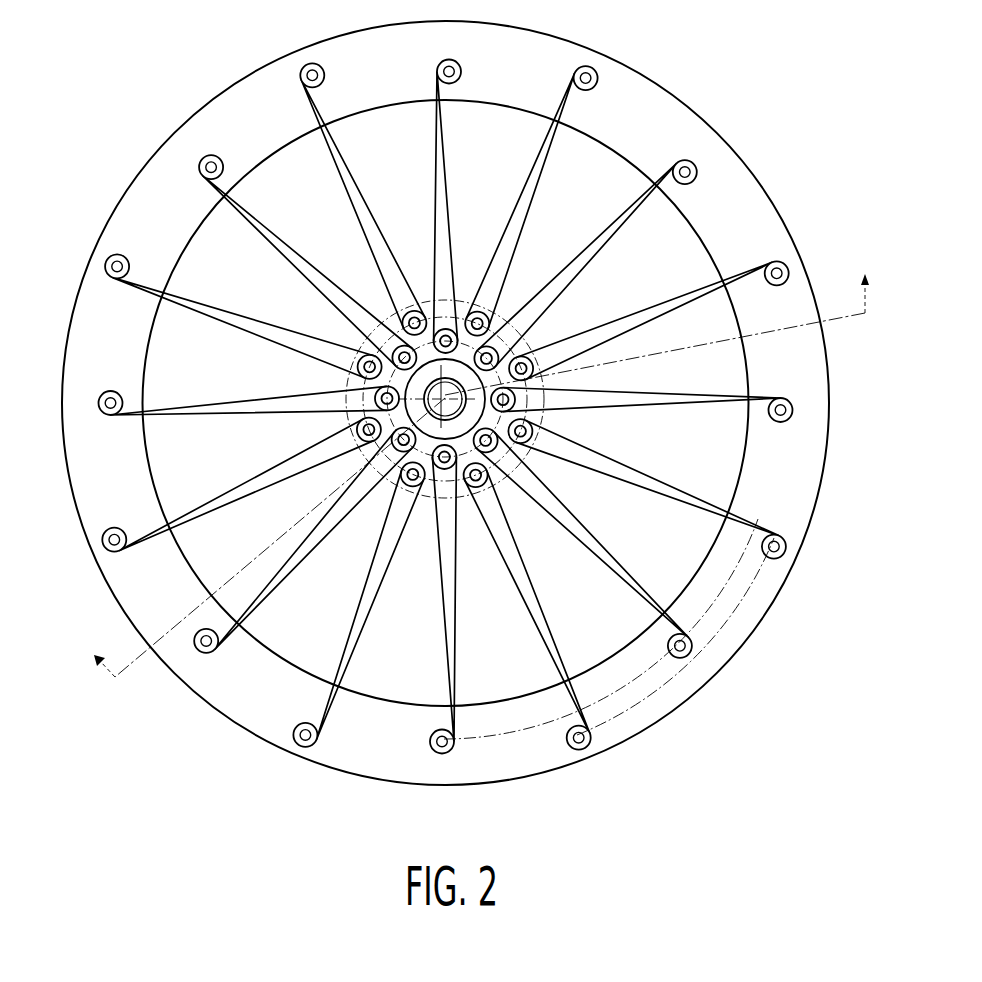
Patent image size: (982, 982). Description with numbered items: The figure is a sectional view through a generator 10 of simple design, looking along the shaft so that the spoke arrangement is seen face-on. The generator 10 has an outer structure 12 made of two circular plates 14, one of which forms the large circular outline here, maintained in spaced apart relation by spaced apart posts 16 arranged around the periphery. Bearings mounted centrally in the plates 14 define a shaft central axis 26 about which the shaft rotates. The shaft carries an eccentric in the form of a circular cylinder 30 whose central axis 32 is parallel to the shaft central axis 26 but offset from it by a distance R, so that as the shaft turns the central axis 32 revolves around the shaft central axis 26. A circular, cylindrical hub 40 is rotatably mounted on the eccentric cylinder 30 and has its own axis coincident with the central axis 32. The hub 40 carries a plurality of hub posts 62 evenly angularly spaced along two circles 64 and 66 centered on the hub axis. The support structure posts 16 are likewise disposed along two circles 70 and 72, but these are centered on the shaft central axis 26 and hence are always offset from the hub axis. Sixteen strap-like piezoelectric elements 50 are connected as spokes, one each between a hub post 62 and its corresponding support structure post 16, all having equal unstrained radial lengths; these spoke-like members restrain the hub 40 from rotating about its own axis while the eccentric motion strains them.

The generator 10 is at (119, 187).
The outer structure 12 is at (828, 456).
The circular plates 14 is at (810, 377).
The posts 16 is at (789, 265).
The shaft central axis 26 is at (353, 383).
The circular cylinder 30 is at (520, 337).
The central axis 32 is at (350, 420).
The hub 40 is at (460, 297).
The piezoelectric elements 50 is at (263, 318).
The hub posts 62 is at (480, 312).
The circle 64 is at (397, 317).
The circle 66 is at (428, 310).
The circle 70 is at (720, 588).
The circle 72 is at (645, 693).